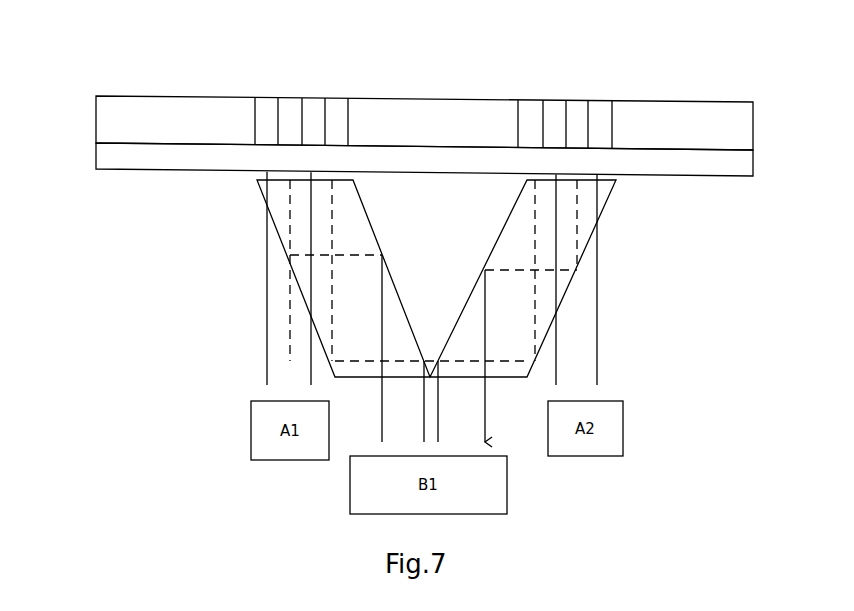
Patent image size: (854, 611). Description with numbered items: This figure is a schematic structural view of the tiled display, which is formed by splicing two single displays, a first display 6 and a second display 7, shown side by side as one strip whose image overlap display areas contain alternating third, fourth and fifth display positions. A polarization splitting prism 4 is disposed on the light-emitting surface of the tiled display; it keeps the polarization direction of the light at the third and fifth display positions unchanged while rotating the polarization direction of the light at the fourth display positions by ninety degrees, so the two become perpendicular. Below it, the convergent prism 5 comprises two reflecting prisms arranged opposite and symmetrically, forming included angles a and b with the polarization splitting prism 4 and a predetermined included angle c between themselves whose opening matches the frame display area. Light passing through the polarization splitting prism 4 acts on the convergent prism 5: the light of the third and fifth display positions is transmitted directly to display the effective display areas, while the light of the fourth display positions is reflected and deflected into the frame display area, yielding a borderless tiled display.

The polarization splitting prism 4 is at (133, 170).
The convergent prism 5 is at (303, 270).
The first display 6 is at (115, 96).
The second display 7 is at (737, 101).